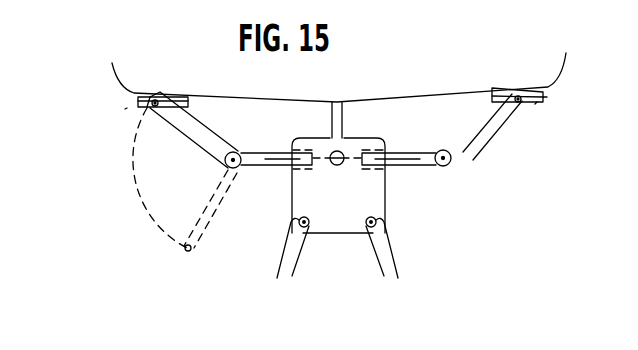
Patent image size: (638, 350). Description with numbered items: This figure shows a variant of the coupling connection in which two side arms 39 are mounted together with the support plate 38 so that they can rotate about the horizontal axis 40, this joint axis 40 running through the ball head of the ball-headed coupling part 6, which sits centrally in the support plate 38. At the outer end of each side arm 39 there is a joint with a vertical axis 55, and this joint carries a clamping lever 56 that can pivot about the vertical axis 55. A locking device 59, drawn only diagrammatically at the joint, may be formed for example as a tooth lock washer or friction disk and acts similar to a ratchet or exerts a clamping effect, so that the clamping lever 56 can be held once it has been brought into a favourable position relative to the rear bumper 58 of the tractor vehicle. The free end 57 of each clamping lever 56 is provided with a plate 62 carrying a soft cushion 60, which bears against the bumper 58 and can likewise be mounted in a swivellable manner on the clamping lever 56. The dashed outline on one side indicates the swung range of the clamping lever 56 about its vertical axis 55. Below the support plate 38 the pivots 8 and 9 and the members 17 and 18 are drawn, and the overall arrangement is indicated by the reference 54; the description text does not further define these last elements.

The ball-headed coupling part 6 is at (337, 166).
The pivot 8 is at (370, 228).
The pivot 9 is at (305, 228).
The leg 17 is at (388, 262).
The leg 18 is at (290, 270).
The support plate 38 is at (378, 218).
The side arm 39 is at (265, 156).
The joint axis 40 is at (384, 157).
The linkage assembly 54 is at (124, 111).
The vertical axis 55 is at (443, 166).
The clamping lever 56 is at (197, 136).
The free end 57 is at (536, 105).
The rear bumper 58 is at (553, 80).
The locking device 59 is at (450, 164).
The soft cushion 60 is at (503, 88).
The plate 62 is at (545, 97).